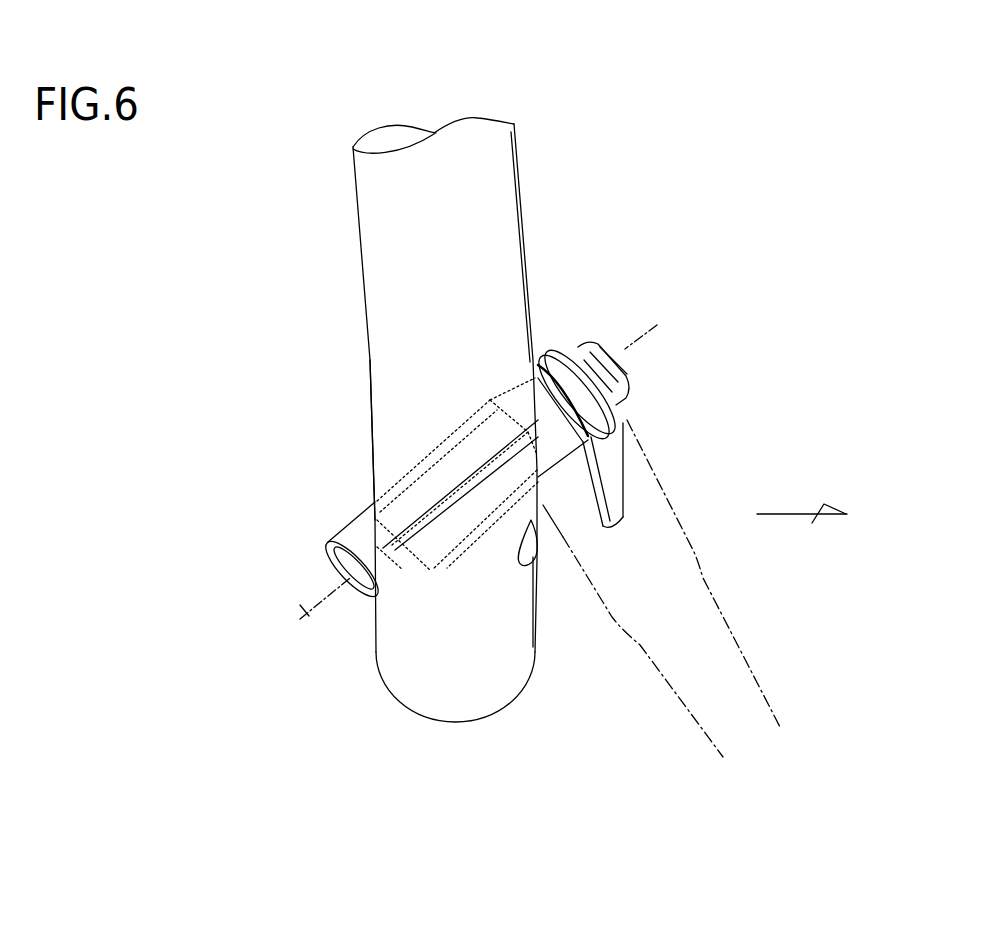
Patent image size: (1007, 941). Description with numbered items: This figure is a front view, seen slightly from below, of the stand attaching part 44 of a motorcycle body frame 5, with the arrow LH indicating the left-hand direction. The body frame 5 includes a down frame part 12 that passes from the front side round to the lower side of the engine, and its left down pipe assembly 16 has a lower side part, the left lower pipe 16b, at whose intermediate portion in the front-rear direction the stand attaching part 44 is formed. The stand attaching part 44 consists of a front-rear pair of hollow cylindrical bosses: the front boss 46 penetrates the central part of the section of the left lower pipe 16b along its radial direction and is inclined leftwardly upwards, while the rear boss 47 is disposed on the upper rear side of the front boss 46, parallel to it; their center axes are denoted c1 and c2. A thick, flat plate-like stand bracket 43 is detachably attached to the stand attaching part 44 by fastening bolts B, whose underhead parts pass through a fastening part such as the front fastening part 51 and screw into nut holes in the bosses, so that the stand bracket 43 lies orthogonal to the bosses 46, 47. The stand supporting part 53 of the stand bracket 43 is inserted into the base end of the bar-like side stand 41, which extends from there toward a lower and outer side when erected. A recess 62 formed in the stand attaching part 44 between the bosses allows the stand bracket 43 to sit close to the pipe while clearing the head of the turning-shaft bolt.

The body frame 5 is at (379, 420).
The down frame part 12 is at (379, 420).
The left down pipe assembly 16 is at (350, 238).
The left lower pipe 16b is at (373, 322).
The side stand 41 is at (762, 667).
The stand bracket 43 is at (663, 451).
The stand attaching part 44 is at (372, 490).
The front boss 46 is at (387, 470).
The rear boss 47 is at (350, 530).
The front fastening part 51 is at (603, 408).
The stand supporting part 53 is at (610, 488).
The recess 62 is at (530, 542).
The fastening bolt B is at (586, 347).
The center axis of front boss c1 is at (652, 332).
The center axis of rear boss c2 is at (304, 603).
The left-hand direction LH is at (819, 514).